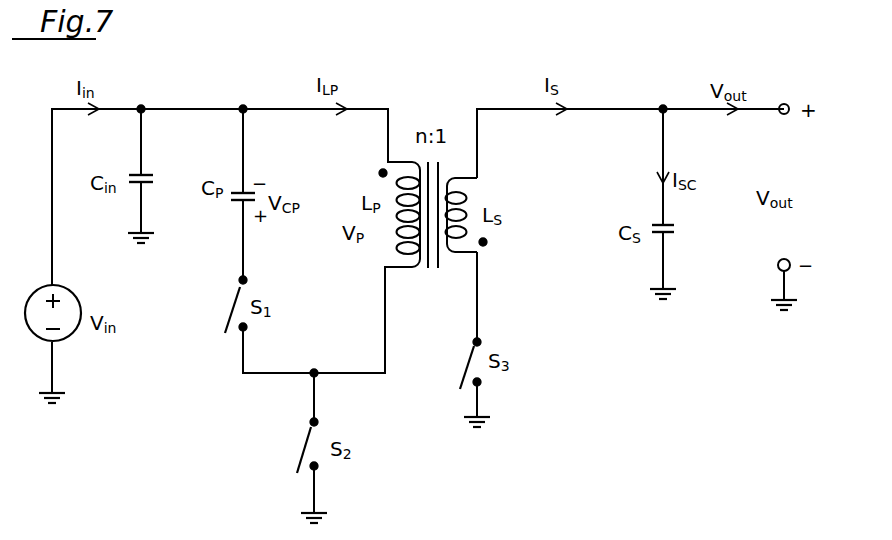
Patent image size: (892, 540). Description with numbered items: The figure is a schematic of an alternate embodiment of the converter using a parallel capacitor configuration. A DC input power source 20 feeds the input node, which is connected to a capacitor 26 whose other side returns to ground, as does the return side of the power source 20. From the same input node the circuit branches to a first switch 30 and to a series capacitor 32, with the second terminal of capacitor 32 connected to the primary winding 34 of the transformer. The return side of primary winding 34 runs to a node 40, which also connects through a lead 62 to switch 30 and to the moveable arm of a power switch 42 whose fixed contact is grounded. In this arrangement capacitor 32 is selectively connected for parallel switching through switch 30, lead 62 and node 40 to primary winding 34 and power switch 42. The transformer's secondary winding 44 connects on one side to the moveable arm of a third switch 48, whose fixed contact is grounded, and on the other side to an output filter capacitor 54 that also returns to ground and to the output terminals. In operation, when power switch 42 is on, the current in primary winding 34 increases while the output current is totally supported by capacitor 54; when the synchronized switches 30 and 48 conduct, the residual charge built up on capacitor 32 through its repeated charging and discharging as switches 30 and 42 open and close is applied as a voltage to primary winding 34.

The DC input power source 20 is at (72, 294).
The capacitor 26 is at (152, 174).
The first switch 30 is at (232, 302).
The series capacitor 32 is at (238, 210).
The primary winding 34 is at (397, 250).
The node 40 is at (314, 369).
The power switch 42 is at (302, 450).
The secondary winding 44 is at (465, 197).
The third switch 48 is at (463, 359).
The capacitor 54 is at (668, 236).
The lead 62 is at (270, 375).